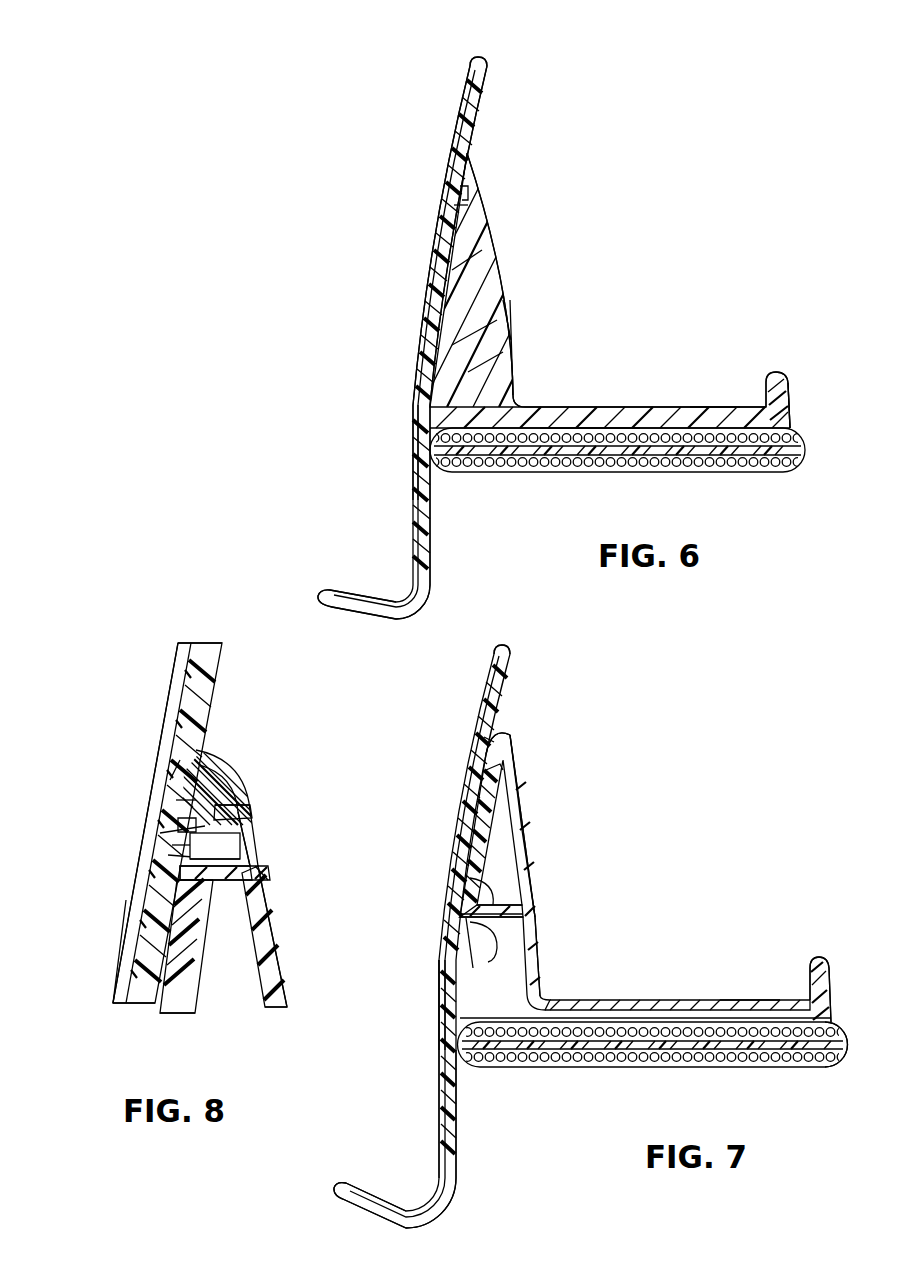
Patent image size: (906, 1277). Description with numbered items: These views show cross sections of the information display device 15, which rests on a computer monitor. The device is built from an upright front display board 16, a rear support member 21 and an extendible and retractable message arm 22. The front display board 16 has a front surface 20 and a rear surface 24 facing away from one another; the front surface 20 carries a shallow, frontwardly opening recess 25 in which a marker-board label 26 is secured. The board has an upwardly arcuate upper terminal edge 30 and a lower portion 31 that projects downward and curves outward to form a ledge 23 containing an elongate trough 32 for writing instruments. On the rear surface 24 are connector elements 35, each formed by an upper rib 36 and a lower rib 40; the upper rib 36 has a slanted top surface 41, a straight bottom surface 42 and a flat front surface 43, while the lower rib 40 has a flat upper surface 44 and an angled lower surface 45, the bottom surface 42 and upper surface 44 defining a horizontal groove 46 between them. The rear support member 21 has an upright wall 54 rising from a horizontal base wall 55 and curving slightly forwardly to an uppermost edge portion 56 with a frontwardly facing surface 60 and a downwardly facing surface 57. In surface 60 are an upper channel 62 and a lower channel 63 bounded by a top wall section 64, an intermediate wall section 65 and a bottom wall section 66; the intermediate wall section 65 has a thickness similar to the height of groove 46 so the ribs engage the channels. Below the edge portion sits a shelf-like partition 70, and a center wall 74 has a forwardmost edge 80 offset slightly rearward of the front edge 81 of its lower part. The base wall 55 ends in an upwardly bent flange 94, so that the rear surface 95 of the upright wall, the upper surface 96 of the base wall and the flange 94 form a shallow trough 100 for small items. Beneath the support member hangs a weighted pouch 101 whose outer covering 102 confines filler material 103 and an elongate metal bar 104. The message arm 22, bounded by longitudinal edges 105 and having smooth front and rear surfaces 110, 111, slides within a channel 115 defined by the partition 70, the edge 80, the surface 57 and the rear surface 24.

In FIG. 6, the information display device 15 is at (536, 135).
In FIG. 7, the information display device 15 is at (582, 780).
In FIG. 6, the front display board 16 is at (400, 297).
In FIG. 7, the front display board 16 is at (447, 822).
In FIG. 8, the front display board 16 is at (98, 658).
In FIG. 6, the front surface 20 is at (403, 425).
In FIG. 7, the front surface 20 is at (436, 983).
In FIG. 8, the front surface 20 is at (165, 690).
In FIG. 6, the rear support member 21 is at (516, 290).
In FIG. 7, the rear support member 21 is at (542, 917).
In FIG. 8, the rear support member 21 is at (298, 953).
In FIG. 6, the message arm 22 is at (470, 240).
In FIG. 7, the message arm 22 is at (482, 835).
In FIG. 8, the message arm 22 is at (195, 963).
In FIG. 6, the ledge 23 is at (345, 598).
In FIG. 7, the ledge 23 is at (352, 1195).
In FIG. 6, the rear surface 24 is at (490, 112).
In FIG. 7, the rear surface 24 is at (510, 702).
In FIG. 8, the rear surface 24 is at (217, 672).
In FIG. 6, the recess 25 is at (413, 520).
In FIG. 7, the recess 25 is at (485, 705).
In FIG. 8, the recess 25 is at (172, 655).
In FIG. 6, the label 26 is at (413, 402).
In FIG. 7, the label 26 is at (438, 1040).
In FIG. 8, the label 26 is at (162, 740).
In FIG. 6, the upper terminal edge 30 is at (480, 56).
In FIG. 7, the upper terminal edge 30 is at (505, 647).
In FIG. 6, the lower portion 31 is at (433, 512).
In FIG. 7, the lower portion 31 is at (458, 1152).
In FIG. 6, the trough 32 is at (378, 605).
In FIG. 7, the trough 32 is at (395, 1215).
In FIG. 7, the connector elements 35 is at (485, 737).
In FIG. 8, the upper rib 36 is at (165, 768).
In FIG. 8, the lower rib 40 is at (158, 832).
In FIG. 8, the top surface 41 is at (228, 788).
In FIG. 8, the bottom surface 42 is at (175, 805).
In FIG. 8, the front surface 43 is at (240, 815).
In FIG. 8, the upper surface 44 is at (240, 860).
In FIG. 8, the lower surface 45 is at (180, 843).
In FIG. 8, the groove 46 is at (182, 828).
In FIG. 6, the upright wall 54 is at (496, 233).
In FIG. 7, the upright wall 54 is at (520, 775).
In FIG. 8, the upright wall 54 is at (280, 921).
In FIG. 6, the base wall 55 is at (672, 402).
In FIG. 7, the base wall 55 is at (660, 1000).
In FIG. 7, the uppermost edge portion 56 is at (506, 731).
In FIG. 8, the uppermost edge portion 56 is at (195, 750).
In FIG. 6, the downwardly facing surface 57 is at (453, 205).
In FIG. 8, the downwardly facing surface 57 is at (215, 888).
In FIG. 6, the frontwardly facing surface 60 is at (460, 187).
In FIG. 8, the upper channel 62 is at (222, 805).
In FIG. 8, the lower channel 63 is at (188, 853).
In FIG. 8, the top wall section 64 is at (197, 772).
In FIG. 8, the intermediate wall section 65 is at (252, 835).
In FIG. 8, the bottom wall section 66 is at (268, 880).
In FIG. 7, the partition 70 is at (495, 918).
In FIG. 6, the center wall 74 is at (468, 343).
In FIG. 6, the forwardmost edge 80 is at (460, 265).
In FIG. 6, the front edge 81 is at (478, 362).
In FIG. 6, the flange 94 is at (770, 375).
In FIG. 7, the flange 94 is at (815, 960).
In FIG. 6, the rear surface 95 is at (506, 318).
In FIG. 7, the rear surface 95 is at (530, 870).
In FIG. 8, the rear surface 95 is at (285, 990).
In FIG. 6, the upper surface 96 is at (605, 405).
In FIG. 7, the upper surface 96 is at (585, 1000).
In FIG. 6, the trough 100 is at (716, 400).
In FIG. 7, the trough 100 is at (750, 995).
In FIG. 6, the weighted pouch 101 is at (808, 423).
In FIG. 7, the weighted pouch 101 is at (845, 1062).
In FIG. 6, the outer covering 102 is at (682, 470).
In FIG. 6, the filler material 103 is at (762, 470).
In FIG. 6, the bar 104 is at (596, 470).
In FIG. 7, the bar 104 is at (620, 1048).
In FIG. 7, the longitudinal edges 105 is at (490, 769).
In FIG. 8, the longitudinal edges 105 is at (262, 878).
In FIG. 8, the front surface 110 is at (150, 1005).
In FIG. 7, the rear surface 111 is at (476, 940).
In FIG. 8, the rear surface 111 is at (195, 1012).
In FIG. 6, the channel 115 is at (440, 300).
In FIG. 7, the channel 115 is at (468, 866).
In FIG. 8, the channel 115 is at (150, 950).